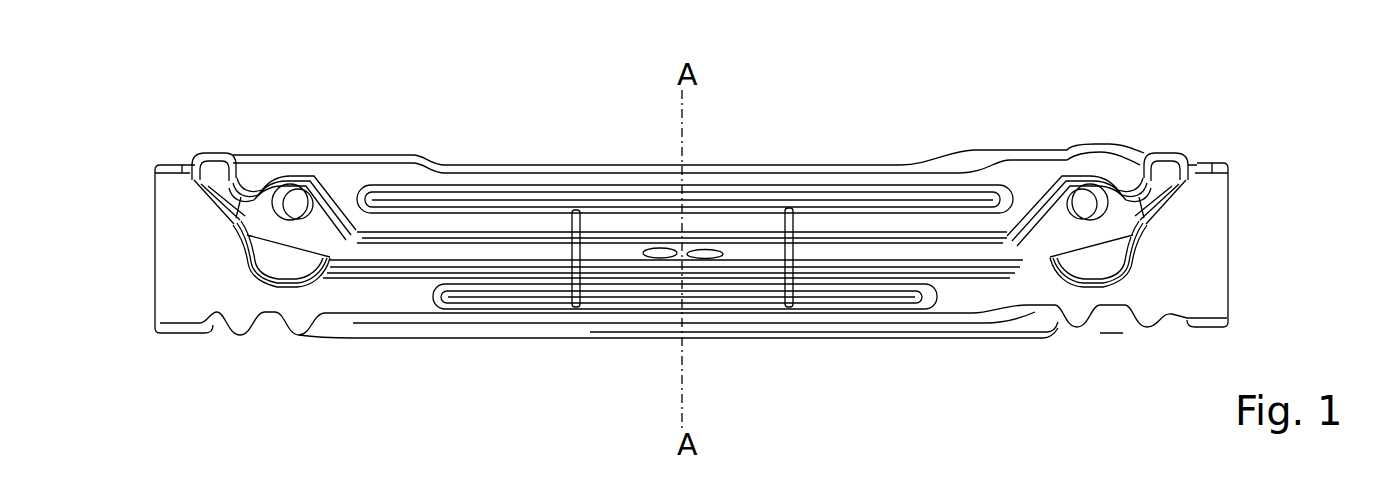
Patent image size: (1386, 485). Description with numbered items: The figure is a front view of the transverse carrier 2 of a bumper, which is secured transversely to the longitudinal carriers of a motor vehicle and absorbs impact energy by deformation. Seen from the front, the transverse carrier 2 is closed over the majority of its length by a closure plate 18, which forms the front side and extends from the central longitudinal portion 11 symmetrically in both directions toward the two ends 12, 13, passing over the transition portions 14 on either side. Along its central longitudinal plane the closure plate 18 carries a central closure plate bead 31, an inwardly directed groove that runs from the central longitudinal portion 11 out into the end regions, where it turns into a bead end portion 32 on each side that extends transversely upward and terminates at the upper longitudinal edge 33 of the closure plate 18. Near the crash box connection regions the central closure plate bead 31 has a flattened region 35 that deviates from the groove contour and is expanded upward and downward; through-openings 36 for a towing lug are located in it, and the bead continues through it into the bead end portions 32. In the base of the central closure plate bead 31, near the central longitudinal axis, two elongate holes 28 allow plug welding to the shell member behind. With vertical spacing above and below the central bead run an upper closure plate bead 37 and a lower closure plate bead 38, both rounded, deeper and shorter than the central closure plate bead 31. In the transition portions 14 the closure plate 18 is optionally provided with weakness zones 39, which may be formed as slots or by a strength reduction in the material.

The transverse carrier 2 is at (1043, 103).
The central longitudinal portion 11 is at (717, 160).
The end 12 is at (1252, 233).
The end 13 is at (135, 275).
The transition portion 14 is at (815, 160).
The closure plate 18 is at (980, 297).
The elongate hole 28 is at (707, 258).
The central closure plate bead 31 is at (503, 255).
The bead end portion 32 is at (206, 156).
The upper longitudinal edge 33 is at (263, 151).
The flattened region 35 is at (320, 213).
The through-opening 36 is at (1097, 192).
The upper closure plate bead 37 is at (878, 190).
The lower closure plate bead 38 is at (845, 309).
The weakness zone 39 is at (793, 308).